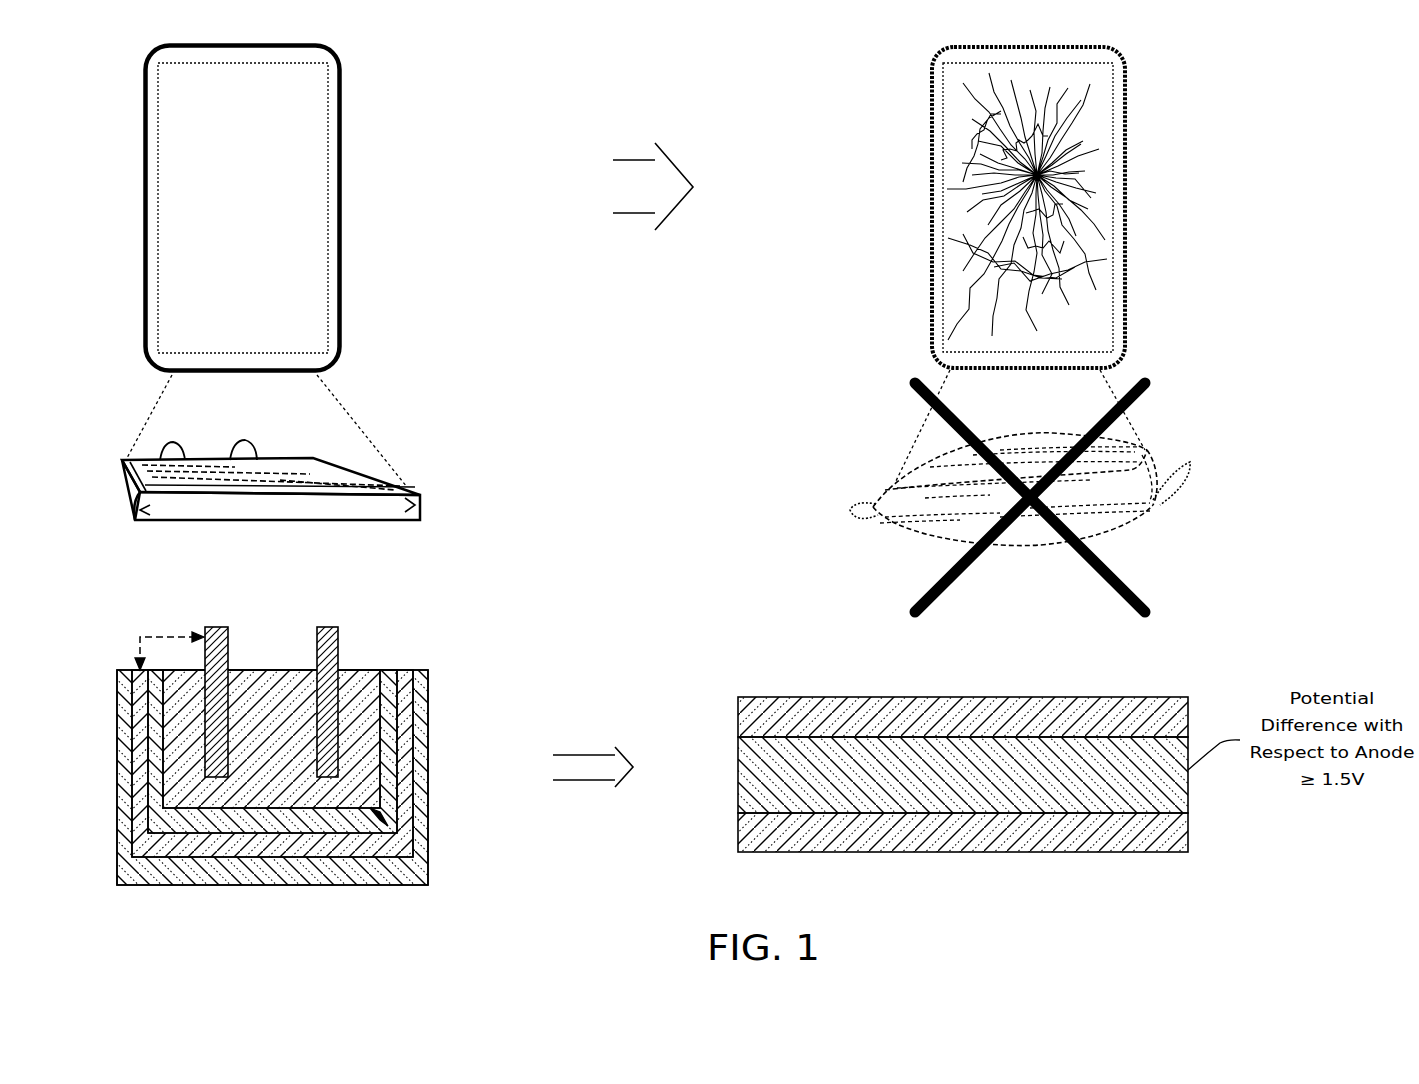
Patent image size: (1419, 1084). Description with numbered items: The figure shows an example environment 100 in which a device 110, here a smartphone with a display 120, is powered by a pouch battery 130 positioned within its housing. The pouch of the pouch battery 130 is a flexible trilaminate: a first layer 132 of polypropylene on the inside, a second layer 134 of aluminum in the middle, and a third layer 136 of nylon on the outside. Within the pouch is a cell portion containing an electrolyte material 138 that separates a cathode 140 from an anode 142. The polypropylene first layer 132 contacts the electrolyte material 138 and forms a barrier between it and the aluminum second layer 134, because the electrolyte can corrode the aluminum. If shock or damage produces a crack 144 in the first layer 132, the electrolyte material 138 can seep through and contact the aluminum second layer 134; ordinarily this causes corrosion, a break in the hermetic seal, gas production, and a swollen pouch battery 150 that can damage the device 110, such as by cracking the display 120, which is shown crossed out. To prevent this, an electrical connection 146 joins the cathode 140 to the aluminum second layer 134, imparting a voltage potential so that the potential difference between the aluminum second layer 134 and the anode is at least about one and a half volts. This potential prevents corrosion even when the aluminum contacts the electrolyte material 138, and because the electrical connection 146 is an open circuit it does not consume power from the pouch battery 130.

The environment 100 is at (1288, 85).
The device 110 is at (343, 130).
The display 120 is at (330, 207).
The pouch battery 130 is at (421, 494).
The first layer 132 is at (389, 669).
The second layer 134 is at (404, 669).
The third layer 136 is at (429, 737).
The electrolyte material 138 is at (246, 669).
The cathode 140 is at (231, 667).
The anode 142 is at (343, 669).
The crack 144 is at (381, 820).
The electrical connection 146 is at (165, 634).
The swollen pouch battery 150 is at (1150, 448).